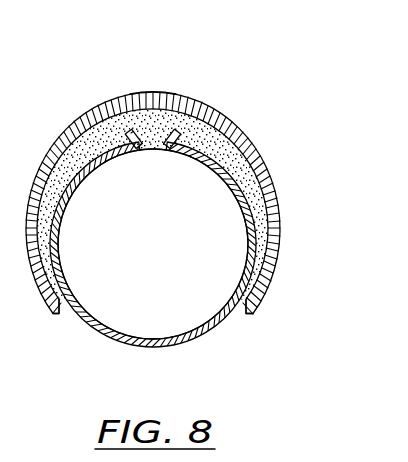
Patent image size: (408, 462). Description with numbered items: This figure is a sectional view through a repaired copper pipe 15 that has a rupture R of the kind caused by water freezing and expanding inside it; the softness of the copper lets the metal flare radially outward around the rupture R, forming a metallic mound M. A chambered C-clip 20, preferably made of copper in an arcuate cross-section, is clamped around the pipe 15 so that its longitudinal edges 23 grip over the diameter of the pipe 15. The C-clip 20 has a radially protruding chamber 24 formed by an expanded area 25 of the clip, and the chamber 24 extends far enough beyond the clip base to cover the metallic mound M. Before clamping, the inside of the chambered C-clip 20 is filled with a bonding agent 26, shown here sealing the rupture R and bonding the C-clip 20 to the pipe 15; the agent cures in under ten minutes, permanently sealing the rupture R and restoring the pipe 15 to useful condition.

The chambered C-clip 20 is at (268, 74).
The radially protruding chamber 24 is at (95, 112).
The expanded area 25 is at (161, 95).
The metallic mound M is at (199, 114).
The bonding agent 26 is at (234, 154).
The rupture R is at (153, 153).
The copper pipe 15 is at (92, 317).
The longitudinal edges 23 is at (67, 313).